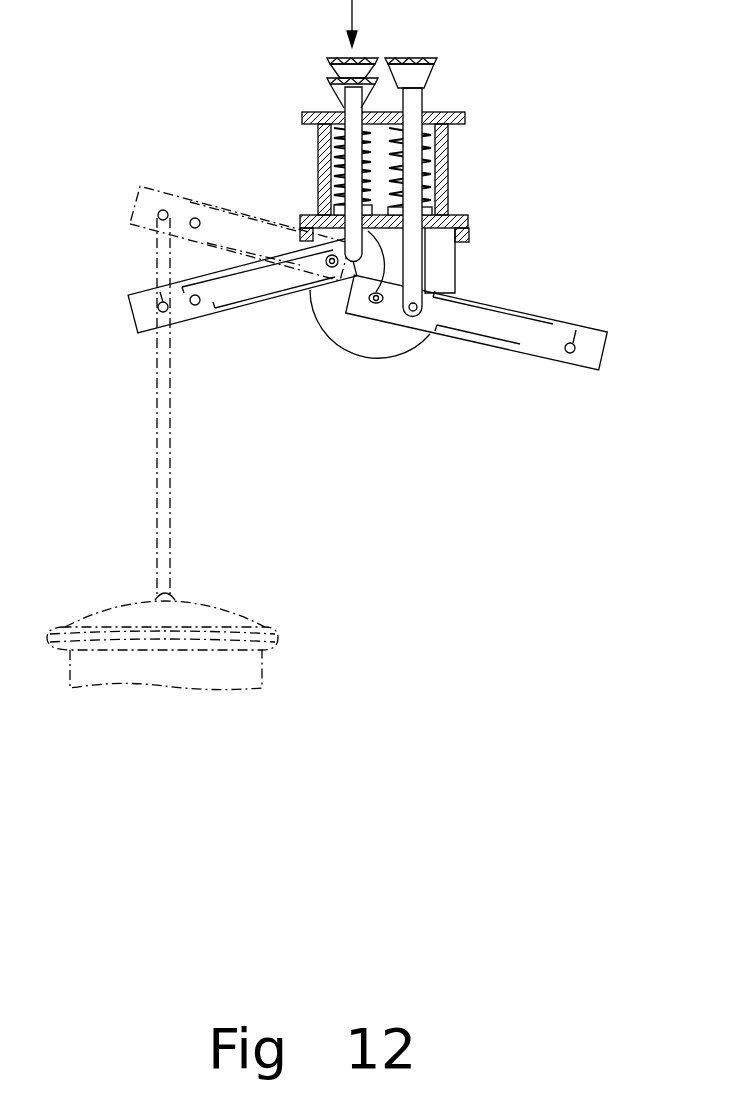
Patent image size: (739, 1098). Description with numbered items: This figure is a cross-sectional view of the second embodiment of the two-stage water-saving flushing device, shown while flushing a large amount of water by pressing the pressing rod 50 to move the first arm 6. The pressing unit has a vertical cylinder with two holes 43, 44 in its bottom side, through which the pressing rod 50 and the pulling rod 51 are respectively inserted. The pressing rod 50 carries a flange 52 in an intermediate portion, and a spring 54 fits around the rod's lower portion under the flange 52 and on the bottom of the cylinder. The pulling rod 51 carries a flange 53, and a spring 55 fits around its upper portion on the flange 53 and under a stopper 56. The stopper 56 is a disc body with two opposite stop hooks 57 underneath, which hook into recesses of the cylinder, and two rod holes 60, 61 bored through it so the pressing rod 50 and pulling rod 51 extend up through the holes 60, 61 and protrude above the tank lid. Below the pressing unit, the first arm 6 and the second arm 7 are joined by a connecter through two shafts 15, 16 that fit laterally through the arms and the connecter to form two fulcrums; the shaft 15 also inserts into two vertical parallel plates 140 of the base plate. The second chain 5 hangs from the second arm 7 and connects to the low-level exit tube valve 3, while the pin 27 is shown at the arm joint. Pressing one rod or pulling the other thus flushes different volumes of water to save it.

The low-level exit tube valve 3 is at (245, 612).
The second chain 5 is at (157, 492).
The first arm 6 is at (128, 302).
The second arm 7 is at (595, 330).
The shaft 15 is at (328, 270).
The shaft 16 is at (375, 310).
The pin 27 is at (412, 322).
The bottom hole 43 is at (327, 218).
The bottom hole 44 is at (468, 235).
The pressing rod 50 is at (340, 58).
The pulling rod 51 is at (423, 58).
The flange 52 is at (318, 128).
The flange 53 is at (447, 215).
The spring 54 is at (320, 205).
The spring 55 is at (448, 182).
The stopper 56 is at (465, 113).
The stop hook 57 is at (447, 150).
The rod hole 60 is at (343, 110).
The rod hole 61 is at (423, 112).
The vertical parallel plate 140 is at (450, 272).